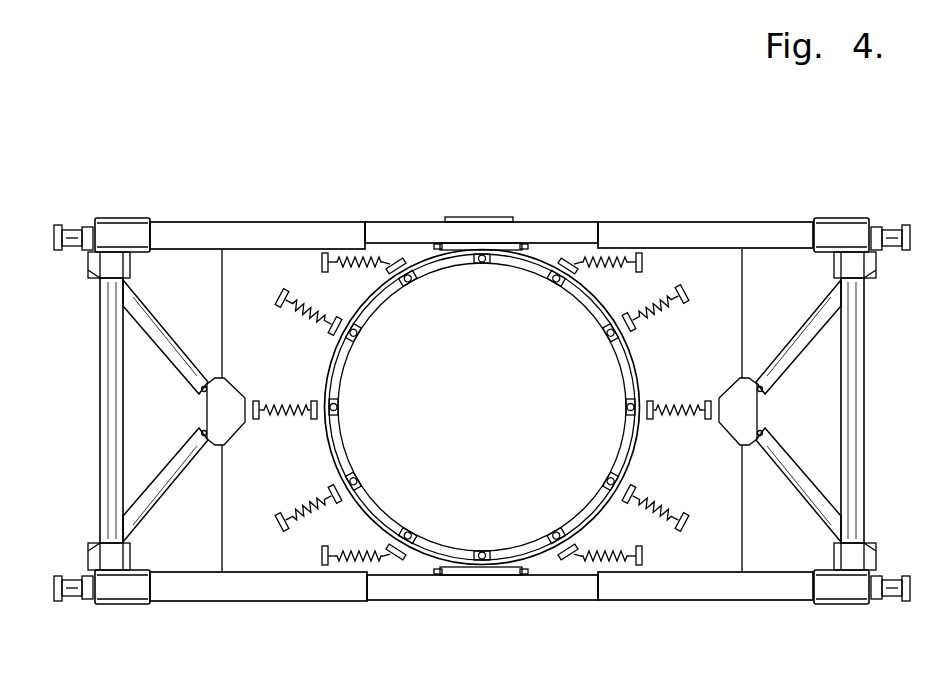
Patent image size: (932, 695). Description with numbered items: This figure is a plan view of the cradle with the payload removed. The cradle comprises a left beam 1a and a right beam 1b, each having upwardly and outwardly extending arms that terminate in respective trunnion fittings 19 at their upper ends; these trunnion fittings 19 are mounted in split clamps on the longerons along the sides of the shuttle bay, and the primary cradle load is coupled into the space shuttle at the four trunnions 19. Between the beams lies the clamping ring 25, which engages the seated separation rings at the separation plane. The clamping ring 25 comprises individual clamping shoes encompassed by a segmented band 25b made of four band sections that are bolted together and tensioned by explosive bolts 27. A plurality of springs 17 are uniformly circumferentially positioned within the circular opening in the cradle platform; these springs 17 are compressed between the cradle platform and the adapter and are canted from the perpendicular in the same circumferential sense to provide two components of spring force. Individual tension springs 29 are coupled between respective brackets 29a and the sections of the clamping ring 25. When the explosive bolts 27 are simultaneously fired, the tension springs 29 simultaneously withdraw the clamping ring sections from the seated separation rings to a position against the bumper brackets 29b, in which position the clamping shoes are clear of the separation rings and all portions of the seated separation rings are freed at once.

The left beam 1a is at (742, 590).
The right beam 1b is at (772, 228).
The springs 17 is at (407, 288).
The trunnion fittings 19 is at (58, 226).
The clamping ring 25 is at (458, 407).
The segmented band 25b is at (324, 430).
The explosive bolts 27 is at (486, 243).
The tension springs 29 is at (289, 400).
The brackets 29a is at (280, 298).
The bumper brackets 29b is at (336, 322).